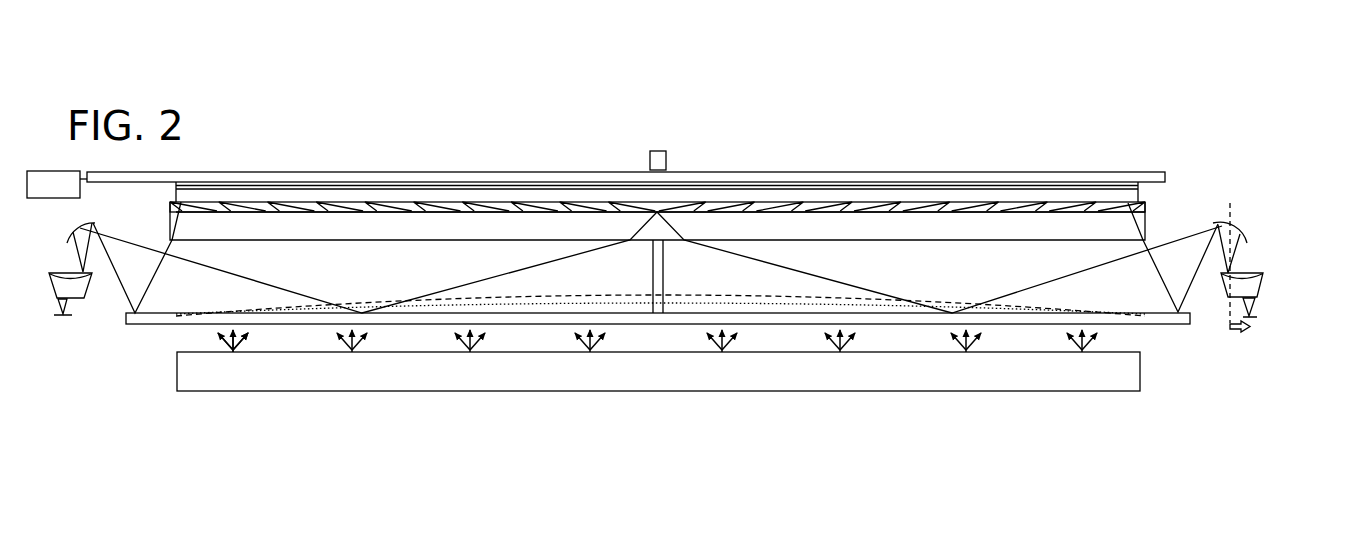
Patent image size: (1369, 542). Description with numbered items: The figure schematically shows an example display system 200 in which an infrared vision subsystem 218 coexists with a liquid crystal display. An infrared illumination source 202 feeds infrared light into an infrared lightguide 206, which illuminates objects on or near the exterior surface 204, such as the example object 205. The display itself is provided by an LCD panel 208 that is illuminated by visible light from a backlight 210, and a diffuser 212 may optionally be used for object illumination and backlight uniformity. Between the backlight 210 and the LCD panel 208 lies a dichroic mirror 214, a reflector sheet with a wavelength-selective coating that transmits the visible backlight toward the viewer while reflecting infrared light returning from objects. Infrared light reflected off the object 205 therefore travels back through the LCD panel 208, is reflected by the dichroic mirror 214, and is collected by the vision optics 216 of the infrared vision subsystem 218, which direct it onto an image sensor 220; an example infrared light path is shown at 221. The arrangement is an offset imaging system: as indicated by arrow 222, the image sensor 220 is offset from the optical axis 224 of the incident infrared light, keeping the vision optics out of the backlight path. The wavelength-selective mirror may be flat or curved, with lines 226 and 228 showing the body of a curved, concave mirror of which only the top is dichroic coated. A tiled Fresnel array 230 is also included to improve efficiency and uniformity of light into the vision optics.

The display system 200 is at (673, 78).
The infrared illumination source 202 is at (72, 196).
The exterior surface 204 is at (760, 170).
The object 205 is at (666, 153).
The infrared lightguide 206 is at (250, 172).
The LCD panel 208 is at (462, 200).
The backlight 210 is at (267, 391).
The diffuser 212 is at (983, 180).
The dichroic mirror 214 is at (1163, 313).
The vision optics 216 is at (1248, 235).
The infrared vision subsystem 218 is at (1288, 229).
The image sensor 220 is at (1273, 283).
The infrared light path 221 is at (792, 263).
The arrow 222 is at (1240, 333).
The optical axis 224 is at (1232, 198).
The curved mirror line 226 is at (518, 300).
The curved mirror line 228 is at (587, 293).
The tiled Fresnel array 230 is at (872, 207).